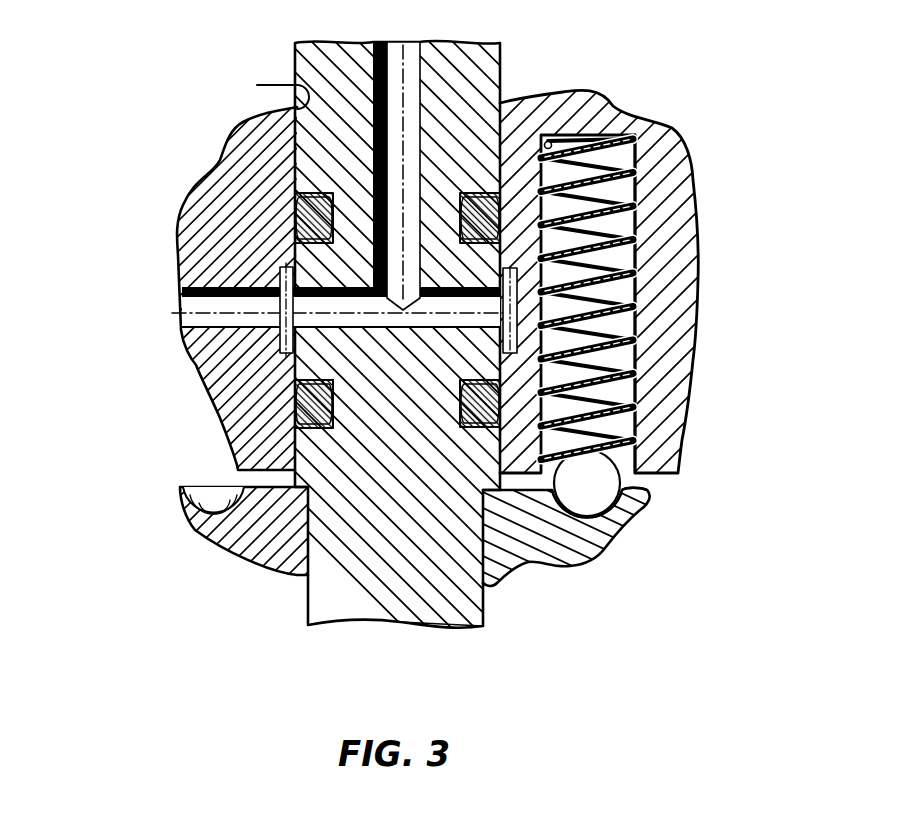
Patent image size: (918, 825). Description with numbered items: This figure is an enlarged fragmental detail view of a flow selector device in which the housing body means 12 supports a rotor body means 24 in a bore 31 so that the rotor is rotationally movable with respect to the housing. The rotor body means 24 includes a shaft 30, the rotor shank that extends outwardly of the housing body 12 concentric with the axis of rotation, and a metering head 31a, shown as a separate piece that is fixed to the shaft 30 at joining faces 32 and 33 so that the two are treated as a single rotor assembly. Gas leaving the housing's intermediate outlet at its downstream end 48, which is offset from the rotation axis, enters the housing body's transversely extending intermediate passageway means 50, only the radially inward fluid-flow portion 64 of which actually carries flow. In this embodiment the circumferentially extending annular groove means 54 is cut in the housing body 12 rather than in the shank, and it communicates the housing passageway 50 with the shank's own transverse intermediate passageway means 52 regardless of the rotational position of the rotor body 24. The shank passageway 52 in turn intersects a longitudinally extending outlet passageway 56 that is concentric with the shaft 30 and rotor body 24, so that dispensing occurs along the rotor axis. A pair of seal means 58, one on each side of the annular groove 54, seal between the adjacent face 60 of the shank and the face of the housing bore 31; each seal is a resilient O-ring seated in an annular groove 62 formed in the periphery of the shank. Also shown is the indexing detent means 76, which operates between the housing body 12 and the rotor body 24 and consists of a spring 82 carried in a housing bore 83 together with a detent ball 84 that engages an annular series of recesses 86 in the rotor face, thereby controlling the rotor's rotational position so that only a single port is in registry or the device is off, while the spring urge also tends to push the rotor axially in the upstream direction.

The housing body means 12 is at (703, 207).
The rotor body means 24 is at (506, 52).
The shaft 30 is at (500, 78).
The bore 31 is at (293, 148).
The metering head 31a is at (600, 550).
The joining face 32 is at (640, 485).
The joining face 33 is at (490, 560).
The downstream end 48 is at (478, 197).
The intermediate passageway means 50 is at (188, 314).
The intermediate passageway means 52 is at (292, 393).
The annular groove means 54 is at (637, 263).
The outlet passageway 56 is at (402, 42).
The seal means 58 is at (293, 212).
The face 60 is at (265, 90).
The annular groove 62 is at (280, 267).
The fluid-flow portion 64 is at (305, 312).
The indexing detent means 76 is at (675, 327).
The spring 82 is at (638, 388).
The housing bore 83 is at (636, 328).
The detent ball 84 is at (602, 478).
The recesses 86 is at (208, 522).